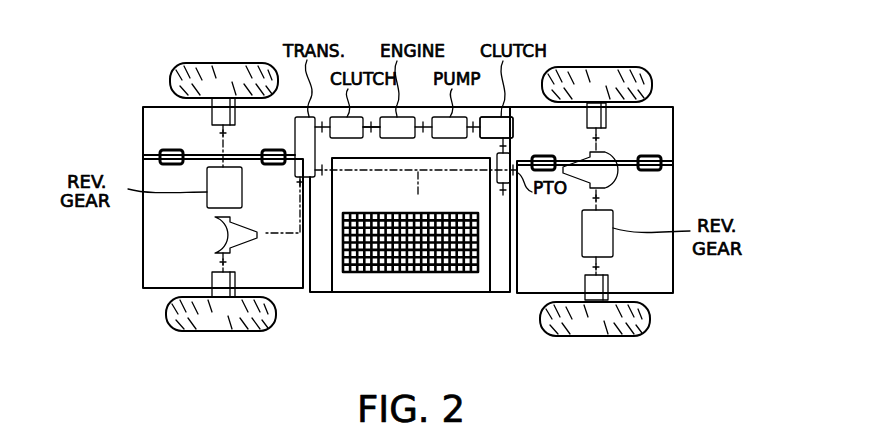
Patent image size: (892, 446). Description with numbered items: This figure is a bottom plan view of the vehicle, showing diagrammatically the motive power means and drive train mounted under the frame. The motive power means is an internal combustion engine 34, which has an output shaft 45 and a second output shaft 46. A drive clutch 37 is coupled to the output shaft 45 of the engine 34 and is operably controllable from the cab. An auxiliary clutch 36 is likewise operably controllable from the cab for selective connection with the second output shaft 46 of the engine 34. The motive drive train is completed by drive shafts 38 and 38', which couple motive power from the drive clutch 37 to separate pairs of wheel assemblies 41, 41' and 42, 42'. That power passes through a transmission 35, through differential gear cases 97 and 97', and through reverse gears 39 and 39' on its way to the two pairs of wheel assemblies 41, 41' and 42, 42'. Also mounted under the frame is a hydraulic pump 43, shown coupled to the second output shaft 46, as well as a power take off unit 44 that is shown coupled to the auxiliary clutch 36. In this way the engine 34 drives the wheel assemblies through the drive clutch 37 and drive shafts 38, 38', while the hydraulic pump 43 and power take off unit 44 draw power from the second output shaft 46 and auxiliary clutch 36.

The wheel assembly 41' is at (219, 61).
The wheel assembly 42' is at (614, 67).
The wheel assembly 41 is at (215, 332).
The wheel assembly 42 is at (603, 338).
The transmission 35 is at (295, 125).
The auxiliary clutch 36 is at (513, 128).
The drive clutch 37 is at (344, 139).
The internal combustion engine 34 is at (397, 139).
The hydraulic pump 43 is at (447, 139).
The second output shaft 46 is at (472, 139).
The output shaft 45 is at (370, 139).
The drive shaft 38' is at (422, 193).
The power take off unit 44 is at (502, 183).
The reverse gear 39 is at (239, 187).
The reverse gear 39' is at (574, 233).
The drive shaft 38 is at (275, 206).
The differential gear case 97 is at (207, 239).
The differential gear case 97' is at (611, 153).